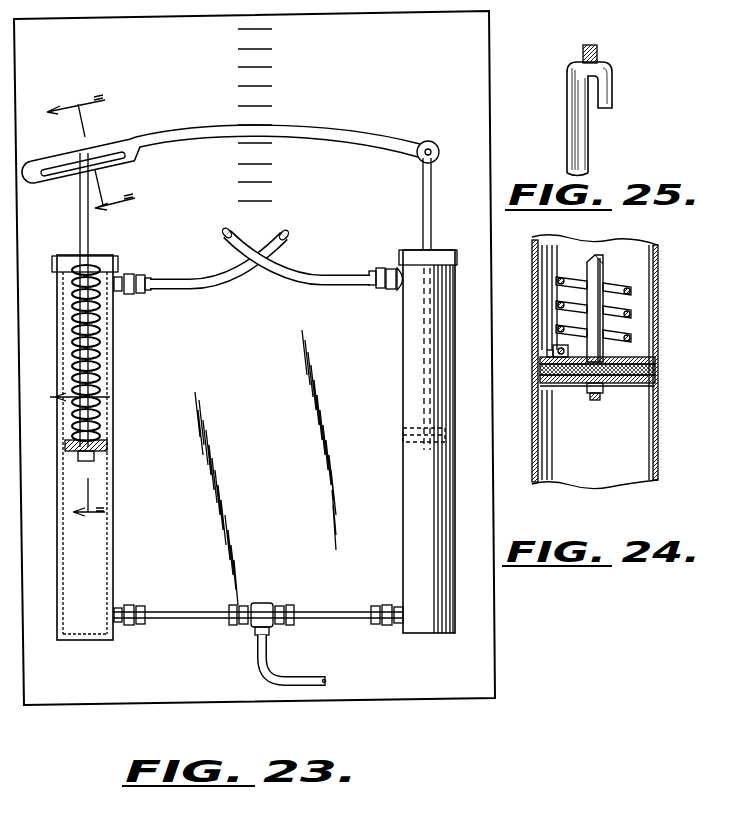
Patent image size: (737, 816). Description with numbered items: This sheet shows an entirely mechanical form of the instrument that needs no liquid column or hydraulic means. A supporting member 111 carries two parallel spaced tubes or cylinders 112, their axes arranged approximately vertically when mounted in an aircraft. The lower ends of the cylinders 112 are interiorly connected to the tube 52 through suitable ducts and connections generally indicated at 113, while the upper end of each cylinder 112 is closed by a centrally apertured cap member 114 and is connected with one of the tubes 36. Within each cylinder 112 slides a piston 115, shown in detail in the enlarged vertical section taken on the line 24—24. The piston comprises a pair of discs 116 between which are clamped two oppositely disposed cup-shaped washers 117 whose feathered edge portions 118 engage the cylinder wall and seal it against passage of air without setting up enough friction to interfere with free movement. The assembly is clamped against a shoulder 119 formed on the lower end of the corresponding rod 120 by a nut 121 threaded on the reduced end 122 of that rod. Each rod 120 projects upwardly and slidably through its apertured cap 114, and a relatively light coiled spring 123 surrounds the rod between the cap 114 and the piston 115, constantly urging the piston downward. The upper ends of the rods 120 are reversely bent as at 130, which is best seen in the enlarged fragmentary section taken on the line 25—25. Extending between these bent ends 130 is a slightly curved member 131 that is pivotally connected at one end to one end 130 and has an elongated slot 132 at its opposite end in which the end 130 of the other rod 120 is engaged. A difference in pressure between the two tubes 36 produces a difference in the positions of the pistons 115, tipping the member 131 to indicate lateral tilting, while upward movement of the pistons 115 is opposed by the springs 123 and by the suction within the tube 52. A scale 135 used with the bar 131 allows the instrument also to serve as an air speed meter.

In FIG. 23, the supporting member 111 is at (490, 43).
In FIG. 23, the scale 135 is at (272, 78).
In FIG. 23, the member (bar) 131 is at (310, 130).
In FIG. 25, the member (bar) 131 is at (600, 56).
In FIG. 23, the elongated slot 132 is at (107, 150).
In FIG. 23, the reversely bent end 130 is at (92, 160).
In FIG. 25, the reversely bent end 130 is at (614, 92).
In FIG. 23, the section line 25— 25 is at (79, 158).
In FIG. 23, the rod 120 is at (80, 241).
In FIG. 25, the rod 120 is at (590, 150).
In FIG. 24, the rod 120 is at (603, 270).
In FIG. 23, the tube (cylinder) 112 is at (113, 500).
In FIG. 24, the tube (cylinder) 112 is at (535, 482).
In FIG. 23, the coiled spring 123 is at (75, 336).
In FIG. 23, the piston 115 is at (105, 445).
In FIG. 23, the section line 24— 24 is at (66, 463).
In FIG. 23, the cap member 114 is at (113, 260).
In FIG. 23, the tube 36 is at (182, 292).
In FIG. 23, the ducts and connections 113 is at (290, 603).
In FIG. 23, the tube 52 is at (262, 669).
In FIG. 24, the shoulder 119 is at (612, 343).
In FIG. 24, the disc 116 is at (635, 356).
In FIG. 24, the cup-shaped washer 117 is at (568, 384).
In FIG. 24, the feathered edge portion 118 is at (545, 366).
In FIG. 24, the nut 121 is at (596, 394).
In FIG. 24, the reduced end 122 is at (600, 401).